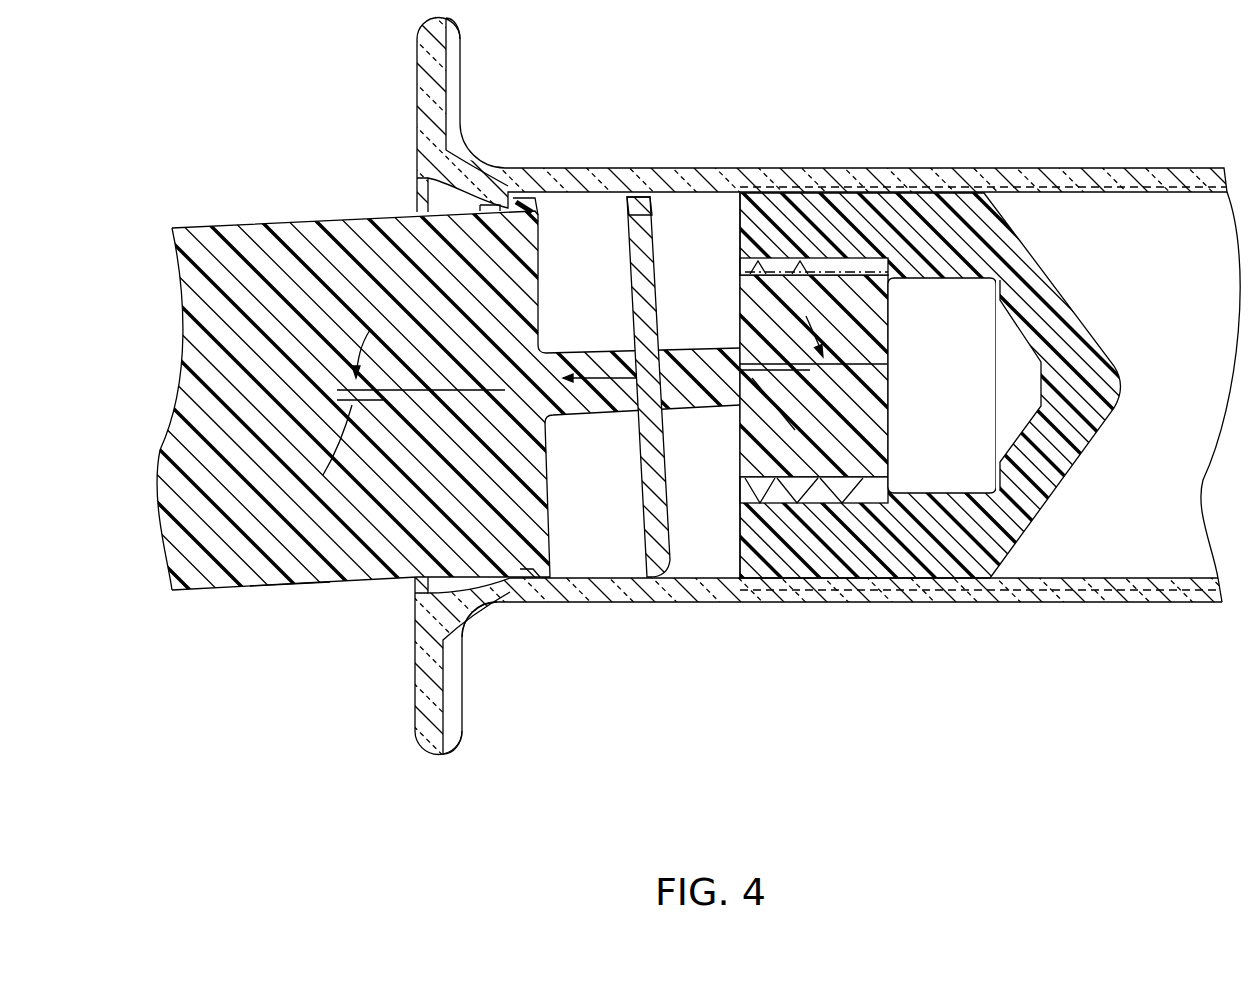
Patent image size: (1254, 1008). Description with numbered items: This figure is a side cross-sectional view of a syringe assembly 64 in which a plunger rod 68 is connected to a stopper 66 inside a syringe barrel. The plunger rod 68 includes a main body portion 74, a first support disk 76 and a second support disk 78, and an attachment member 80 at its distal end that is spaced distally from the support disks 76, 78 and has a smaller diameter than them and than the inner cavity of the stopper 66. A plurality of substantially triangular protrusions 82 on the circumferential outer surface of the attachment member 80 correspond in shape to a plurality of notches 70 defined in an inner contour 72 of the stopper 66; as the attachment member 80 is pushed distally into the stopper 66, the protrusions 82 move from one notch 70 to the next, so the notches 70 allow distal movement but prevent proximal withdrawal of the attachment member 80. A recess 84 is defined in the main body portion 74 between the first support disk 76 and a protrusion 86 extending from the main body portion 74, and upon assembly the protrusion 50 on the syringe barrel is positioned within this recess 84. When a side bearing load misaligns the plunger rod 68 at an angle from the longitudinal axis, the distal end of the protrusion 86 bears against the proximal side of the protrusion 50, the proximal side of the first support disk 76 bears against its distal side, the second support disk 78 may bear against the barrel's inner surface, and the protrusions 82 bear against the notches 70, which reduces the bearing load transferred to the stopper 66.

The syringe assembly 64 is at (352, 98).
The stopper 66 is at (627, 504).
The protrusion 50 is at (538, 207).
The main body portion 74 is at (276, 238).
The first support disk 76 is at (540, 212).
The second support disk 78 is at (643, 207).
The attachment member 80 is at (880, 278).
The protrusions 82 is at (808, 458).
The recess 84 is at (533, 580).
The protrusion 86 is at (463, 604).
The plunger rod 68 is at (292, 590).
The notches 70 is at (873, 495).
The inner contour 72 is at (932, 495).